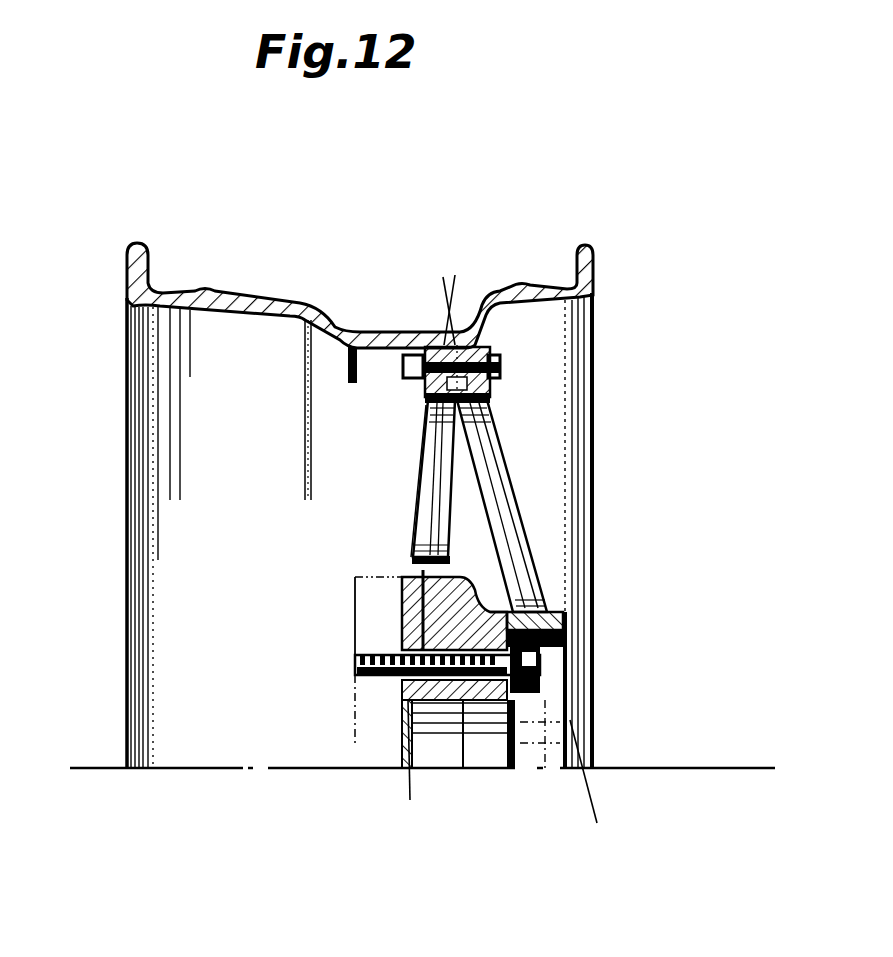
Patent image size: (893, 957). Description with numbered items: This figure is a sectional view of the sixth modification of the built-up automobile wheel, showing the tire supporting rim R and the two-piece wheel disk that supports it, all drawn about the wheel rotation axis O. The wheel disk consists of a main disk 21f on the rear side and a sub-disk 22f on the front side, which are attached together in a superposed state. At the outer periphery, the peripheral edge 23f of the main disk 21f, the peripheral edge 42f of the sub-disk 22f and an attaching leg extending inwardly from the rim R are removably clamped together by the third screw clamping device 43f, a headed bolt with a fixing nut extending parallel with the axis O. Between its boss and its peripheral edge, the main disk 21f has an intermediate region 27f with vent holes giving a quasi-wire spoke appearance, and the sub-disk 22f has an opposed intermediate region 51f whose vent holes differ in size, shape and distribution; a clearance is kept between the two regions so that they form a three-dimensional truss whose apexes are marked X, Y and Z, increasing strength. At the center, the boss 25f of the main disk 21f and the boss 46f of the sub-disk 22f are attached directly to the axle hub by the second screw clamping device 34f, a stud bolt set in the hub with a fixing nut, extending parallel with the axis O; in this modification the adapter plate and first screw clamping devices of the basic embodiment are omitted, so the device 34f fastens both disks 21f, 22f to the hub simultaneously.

The tire supporting rim R is at (122, 599).
The peripheral edge of the sub-disk 42f is at (490, 396).
The third screw clamping device 43f is at (497, 366).
The peripheral edge of the main disk 23f is at (427, 395).
The main disk 21f is at (410, 502).
The intermediate region of the main disk 27f is at (420, 456).
The sub-disk 22f is at (535, 512).
The intermediate region of the sub-disk 51f is at (512, 468).
The boss of the main disk 25f is at (402, 600).
The boss of the sub-disk 46f is at (565, 622).
The second screw clamping device 34f is at (358, 666).
The triangle apex X is at (447, 308).
The triangle apex Y is at (410, 768).
The triangle apex Z is at (583, 767).
The wheel rotation axis O is at (418, 772).